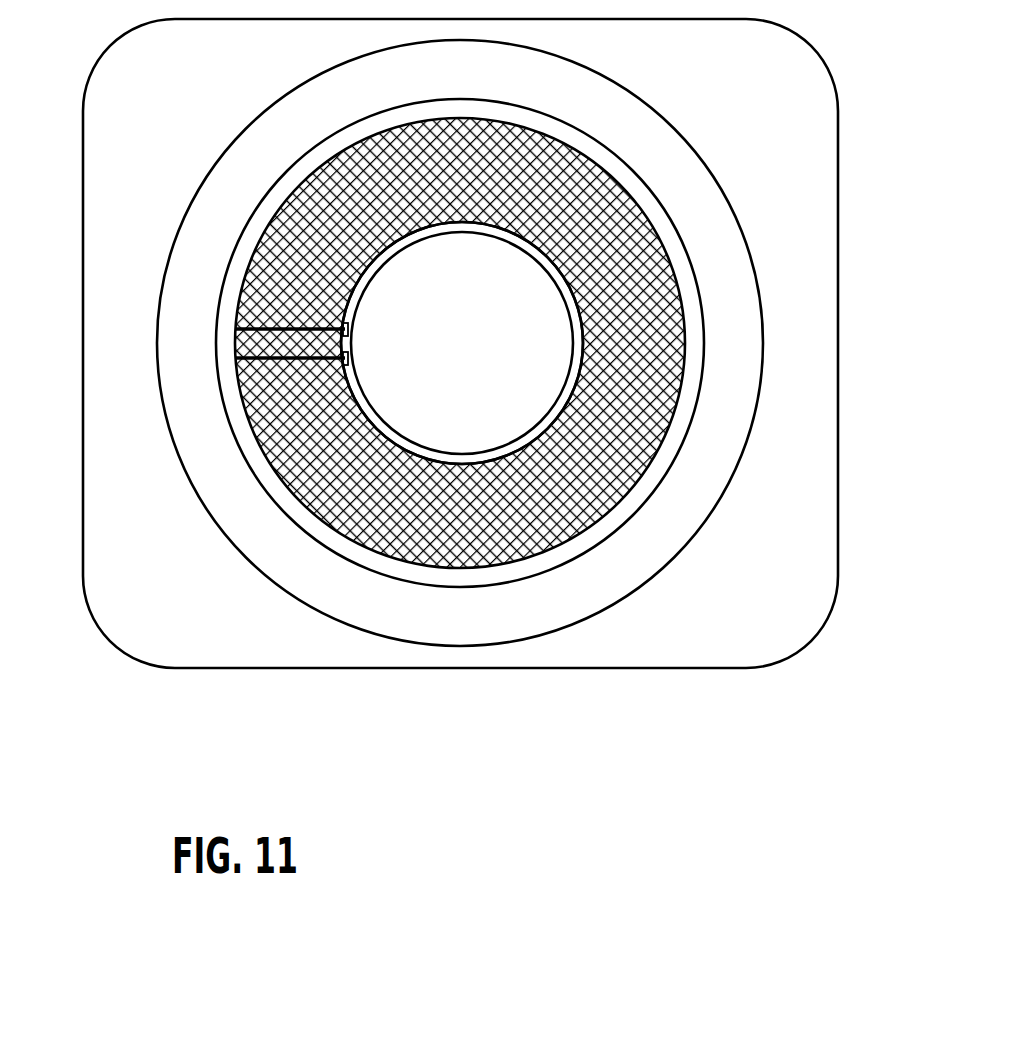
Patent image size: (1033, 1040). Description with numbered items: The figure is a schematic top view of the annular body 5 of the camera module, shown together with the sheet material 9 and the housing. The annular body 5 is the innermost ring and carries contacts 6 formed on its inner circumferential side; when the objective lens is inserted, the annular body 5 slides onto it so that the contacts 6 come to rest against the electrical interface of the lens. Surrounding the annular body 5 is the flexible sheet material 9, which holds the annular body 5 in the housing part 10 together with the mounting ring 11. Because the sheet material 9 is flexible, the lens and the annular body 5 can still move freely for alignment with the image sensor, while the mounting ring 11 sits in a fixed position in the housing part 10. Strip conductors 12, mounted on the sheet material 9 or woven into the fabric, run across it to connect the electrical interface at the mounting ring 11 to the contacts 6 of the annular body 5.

The annular body 5 is at (352, 272).
The contacts 6 is at (349, 330).
The sheet material 9 is at (637, 353).
The housing part 10 is at (702, 483).
The mounting ring 11 is at (690, 277).
The strip conductors 12 is at (258, 377).